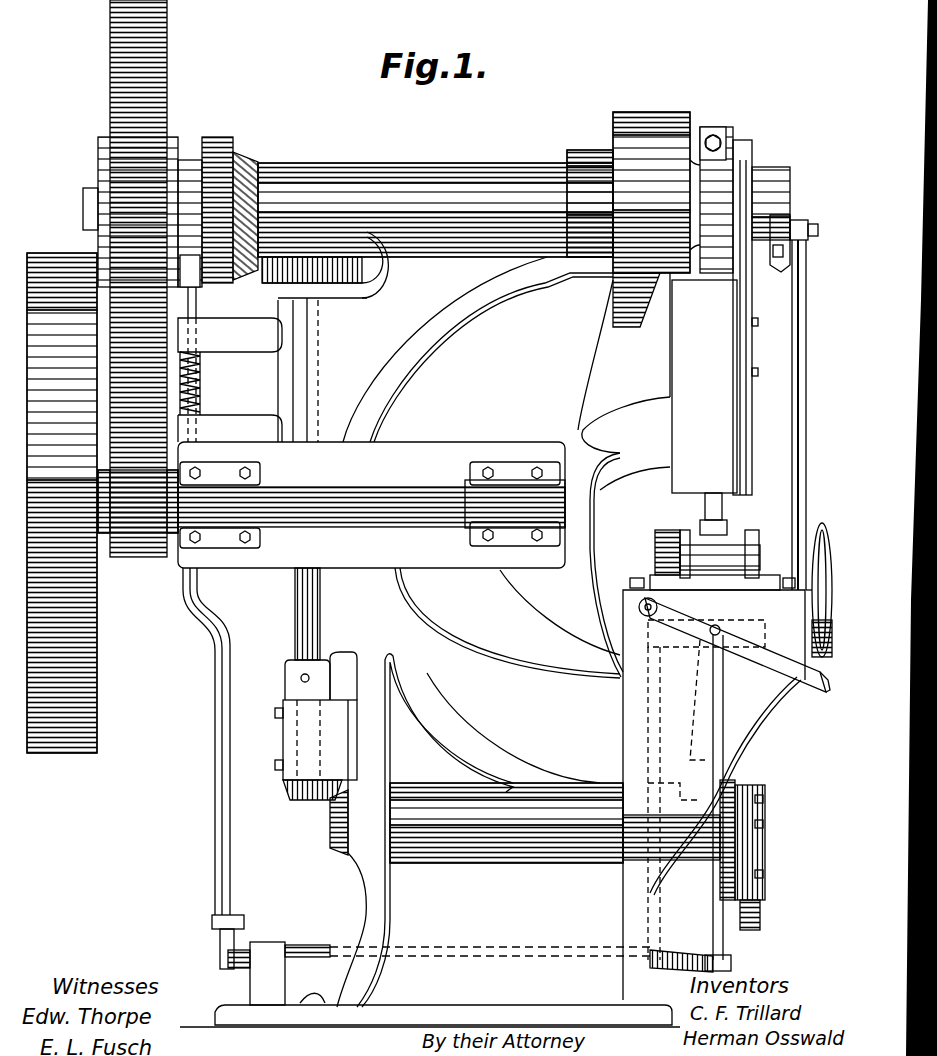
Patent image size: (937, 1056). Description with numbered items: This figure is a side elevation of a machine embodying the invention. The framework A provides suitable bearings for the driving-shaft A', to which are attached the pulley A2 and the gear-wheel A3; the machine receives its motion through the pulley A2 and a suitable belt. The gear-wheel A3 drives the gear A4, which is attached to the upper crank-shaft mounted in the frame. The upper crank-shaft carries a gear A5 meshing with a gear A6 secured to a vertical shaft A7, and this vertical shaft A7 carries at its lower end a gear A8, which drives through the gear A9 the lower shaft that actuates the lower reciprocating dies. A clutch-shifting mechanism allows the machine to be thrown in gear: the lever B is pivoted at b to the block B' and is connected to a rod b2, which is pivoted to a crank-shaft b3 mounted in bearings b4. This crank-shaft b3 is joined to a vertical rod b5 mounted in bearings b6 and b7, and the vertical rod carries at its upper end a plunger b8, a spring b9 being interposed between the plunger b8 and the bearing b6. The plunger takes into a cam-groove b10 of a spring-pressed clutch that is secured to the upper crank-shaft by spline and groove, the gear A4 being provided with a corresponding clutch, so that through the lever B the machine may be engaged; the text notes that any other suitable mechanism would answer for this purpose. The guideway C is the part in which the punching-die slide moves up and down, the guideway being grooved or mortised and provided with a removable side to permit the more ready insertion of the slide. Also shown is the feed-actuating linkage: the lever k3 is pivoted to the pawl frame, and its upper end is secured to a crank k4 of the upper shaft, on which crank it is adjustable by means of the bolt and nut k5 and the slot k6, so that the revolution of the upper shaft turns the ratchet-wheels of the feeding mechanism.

The framework A is at (430, 629).
The driving-shaft A' is at (371, 505).
The pulley A2 is at (62, 503).
The gear-wheel A3 is at (150, 560).
The gear A4 is at (165, 120).
The gear A5 is at (255, 162).
The gear A6 is at (358, 287).
The vertical shaft A7 is at (300, 620).
The gear A8 is at (284, 800).
The gear A9 is at (338, 852).
The lever B is at (819, 623).
The block B' is at (714, 795).
The guideway C is at (704, 407).
The pivot b is at (656, 612).
The rod b2 is at (723, 935).
The crank-shaft b3 is at (678, 950).
The bearings b4 is at (286, 946).
The vertical rod b5 is at (222, 832).
The bearing b6 is at (198, 445).
The bearing b7 is at (198, 335).
The plunger b8 is at (198, 286).
The spring b9 is at (200, 392).
The cam-groove b10 is at (190, 158).
The lever k3 is at (806, 448).
The crank k4 is at (780, 193).
The bolt and nut k5 is at (808, 238).
The slot k6 is at (781, 274).